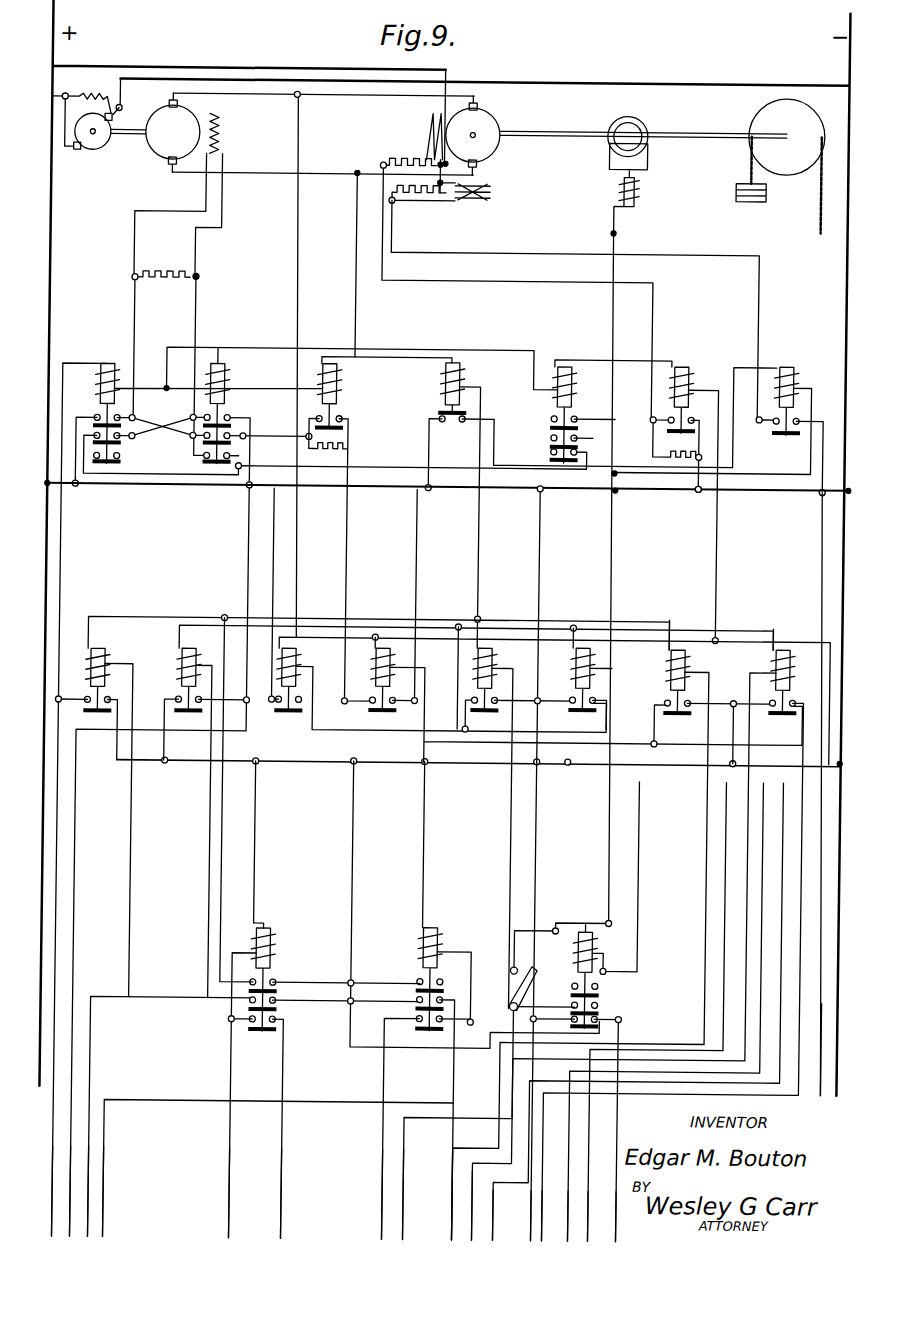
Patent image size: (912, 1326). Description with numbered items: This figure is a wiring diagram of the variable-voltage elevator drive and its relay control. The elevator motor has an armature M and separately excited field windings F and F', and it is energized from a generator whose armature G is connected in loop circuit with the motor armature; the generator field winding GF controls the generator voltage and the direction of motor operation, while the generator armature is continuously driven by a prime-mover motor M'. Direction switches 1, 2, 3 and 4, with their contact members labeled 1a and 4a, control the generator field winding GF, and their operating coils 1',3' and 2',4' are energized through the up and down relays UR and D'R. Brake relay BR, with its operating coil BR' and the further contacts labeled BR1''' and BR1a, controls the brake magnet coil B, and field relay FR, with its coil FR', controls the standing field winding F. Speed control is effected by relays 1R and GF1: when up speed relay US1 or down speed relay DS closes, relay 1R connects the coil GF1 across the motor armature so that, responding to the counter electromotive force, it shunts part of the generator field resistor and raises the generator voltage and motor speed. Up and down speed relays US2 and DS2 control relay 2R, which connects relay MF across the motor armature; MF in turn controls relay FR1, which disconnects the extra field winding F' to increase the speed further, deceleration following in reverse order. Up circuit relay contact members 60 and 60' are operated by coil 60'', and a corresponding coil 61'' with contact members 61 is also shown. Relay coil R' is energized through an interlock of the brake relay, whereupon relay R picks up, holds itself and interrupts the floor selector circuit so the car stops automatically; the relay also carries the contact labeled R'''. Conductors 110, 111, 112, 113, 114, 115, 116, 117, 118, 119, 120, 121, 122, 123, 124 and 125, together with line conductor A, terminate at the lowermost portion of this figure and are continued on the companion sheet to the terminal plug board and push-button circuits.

The prime mover motor M' is at (109, 143).
The generator armature G is at (150, 160).
The generator field winding GF is at (214, 135).
The elevator motor armature M is at (485, 136).
The motor standing field winding F is at (419, 138).
The motor extra field winding F' is at (441, 203).
The brake magnet coil B is at (633, 196).
The direction switch coils 2',4' is at (94, 395).
The direction switch 4 is at (94, 421).
The direction switch 2 is at (97, 428).
The contact 4a is at (114, 459).
The direction switch coils 1',3' is at (226, 393).
The direction switch 1 is at (223, 407).
The direction switch 3 is at (224, 438).
The contact 1a is at (204, 458).
The generator field relay coil GF1 is at (334, 392).
The motor field relay MF is at (460, 385).
The brake relay operating coil BR' is at (559, 397).
The brake relay BR is at (547, 412).
The brake relay contact BR1''' is at (537, 436).
The brake relay contact BR1a is at (551, 451).
The field relay operating coil FR' is at (698, 389).
The field relay FR is at (690, 409).
The extra field relay FR1 is at (795, 416).
The up relay UR is at (112, 645).
The down relay D'R is at (190, 666).
The speed relay 1R is at (296, 662).
The speed relay 2R is at (371, 675).
The up speed relay US1 is at (495, 672).
The down speed relay DS is at (590, 660).
The up speed relay US2 is at (688, 662).
The down speed relay DS2 is at (793, 662).
The up circuit relay coil 60'' is at (280, 972).
The up circuit relay contact members 60' is at (346, 971).
The up circuit relay contact members 60 is at (281, 1012).
The relay coil 61'' is at (414, 972).
The contacts 61 is at (404, 1013).
The relay coil R' is at (595, 972).
The contact R''' is at (613, 986).
The relay R is at (607, 1016).
The conductor 110 is at (59, 1158).
The conductor 111 is at (77, 1157).
The conductor 112 is at (95, 1157).
The conductor 113 is at (111, 1158).
The conductor 114 is at (236, 1168).
The conductor 115 is at (411, 1182).
The conductor 116 is at (459, 1198).
The conductor 117 is at (479, 1196).
The conductor 118 is at (500, 1207).
The conductor 119 is at (538, 1209).
The conductor 120 is at (562, 1208).
The conductor 121 is at (575, 1198).
The conductor 122 is at (595, 1212).
The conductor 123 is at (824, 1090).
The conductor 124 is at (288, 1196).
The conductor 125 is at (389, 1203).
The line conductor A is at (623, 1228).